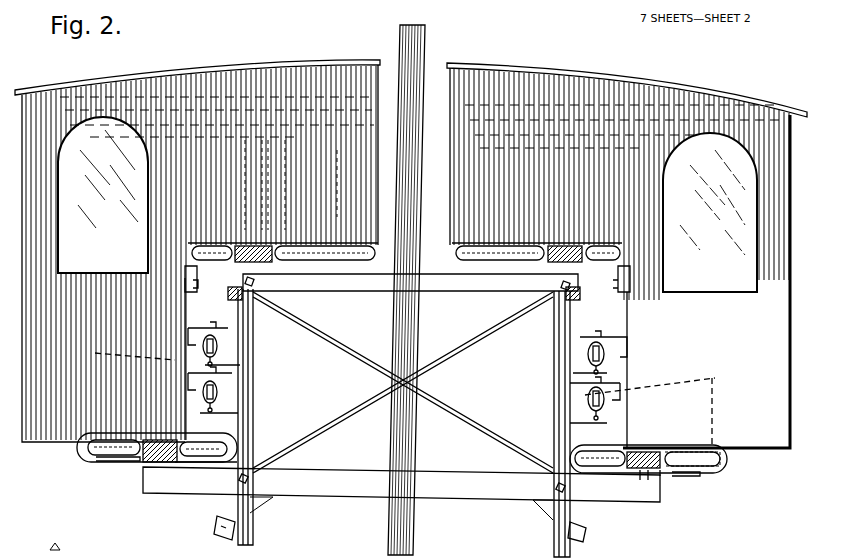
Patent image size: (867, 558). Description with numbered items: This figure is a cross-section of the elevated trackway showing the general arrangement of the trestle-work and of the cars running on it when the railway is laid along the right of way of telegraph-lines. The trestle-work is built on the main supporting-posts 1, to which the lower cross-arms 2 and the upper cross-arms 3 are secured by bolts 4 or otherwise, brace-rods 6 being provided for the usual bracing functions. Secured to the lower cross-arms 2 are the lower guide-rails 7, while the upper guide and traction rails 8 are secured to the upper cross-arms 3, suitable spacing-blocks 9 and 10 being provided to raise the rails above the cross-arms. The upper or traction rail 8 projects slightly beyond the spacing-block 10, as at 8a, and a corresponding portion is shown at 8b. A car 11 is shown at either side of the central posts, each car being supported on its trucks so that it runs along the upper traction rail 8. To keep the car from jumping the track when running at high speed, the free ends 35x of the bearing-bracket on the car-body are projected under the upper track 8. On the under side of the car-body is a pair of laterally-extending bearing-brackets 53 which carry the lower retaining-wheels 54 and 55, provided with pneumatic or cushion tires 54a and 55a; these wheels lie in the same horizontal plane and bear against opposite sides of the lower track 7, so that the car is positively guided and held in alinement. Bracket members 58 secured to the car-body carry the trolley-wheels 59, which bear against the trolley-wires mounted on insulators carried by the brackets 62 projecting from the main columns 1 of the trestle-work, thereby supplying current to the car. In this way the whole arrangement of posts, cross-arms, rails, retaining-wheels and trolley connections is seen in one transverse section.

The main supporting-posts 1 is at (245, 399).
The cross-arms 2 is at (401, 484).
The cross-arms 3 is at (410, 282).
The bolts 4 is at (250, 480).
The brace-rods 6 is at (362, 340).
The lower guide-rails 7 is at (648, 477).
The upper guide and traction rails 8 is at (262, 248).
The projecting portion of traction rail 8a is at (585, 268).
The upper channel bracket 8b is at (200, 270).
The spacing-block 9 is at (262, 267).
The spacing-block 10 is at (571, 286).
The car 11 is at (411, 244).
The free ends of bracket 35x is at (585, 320).
The bearing-brackets 53 is at (178, 440).
The lower retaining-wheel 54 is at (93, 455).
The pneumatic or cushion tire 54a is at (118, 461).
The lower retaining-wheel 55 is at (674, 470).
The pneumatic or cushion tire 55a is at (212, 464).
The bracket members 58 is at (205, 328).
The trolley-wheels 59 is at (218, 390).
The brackets 62 is at (403, 402).